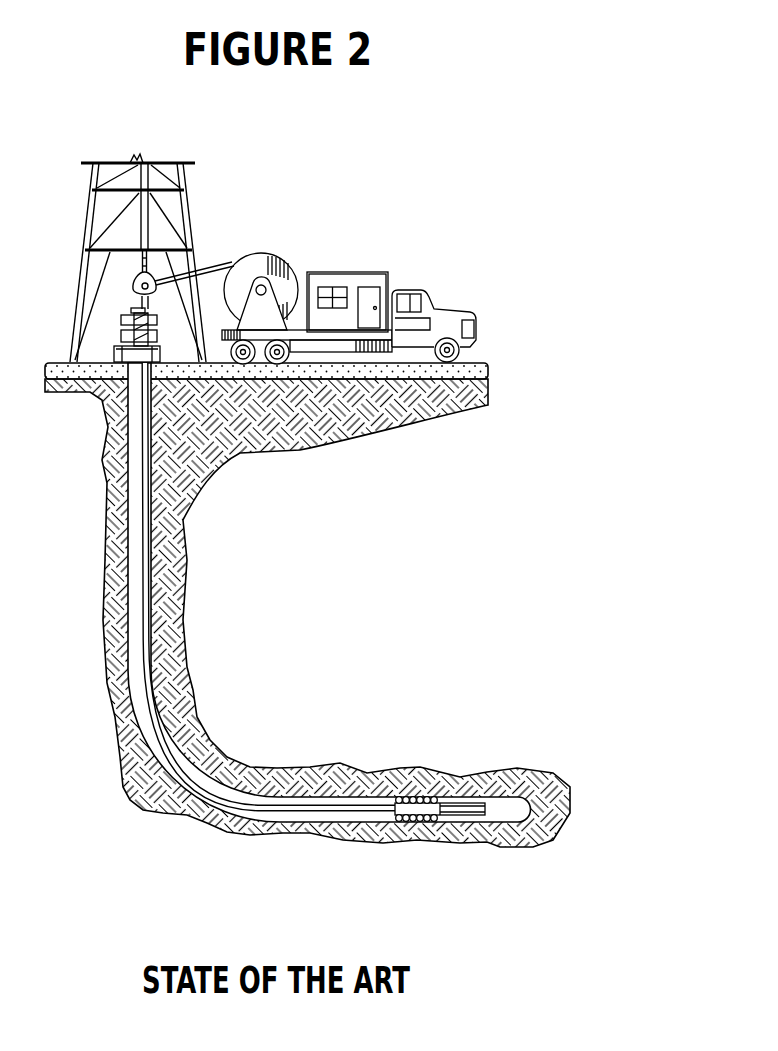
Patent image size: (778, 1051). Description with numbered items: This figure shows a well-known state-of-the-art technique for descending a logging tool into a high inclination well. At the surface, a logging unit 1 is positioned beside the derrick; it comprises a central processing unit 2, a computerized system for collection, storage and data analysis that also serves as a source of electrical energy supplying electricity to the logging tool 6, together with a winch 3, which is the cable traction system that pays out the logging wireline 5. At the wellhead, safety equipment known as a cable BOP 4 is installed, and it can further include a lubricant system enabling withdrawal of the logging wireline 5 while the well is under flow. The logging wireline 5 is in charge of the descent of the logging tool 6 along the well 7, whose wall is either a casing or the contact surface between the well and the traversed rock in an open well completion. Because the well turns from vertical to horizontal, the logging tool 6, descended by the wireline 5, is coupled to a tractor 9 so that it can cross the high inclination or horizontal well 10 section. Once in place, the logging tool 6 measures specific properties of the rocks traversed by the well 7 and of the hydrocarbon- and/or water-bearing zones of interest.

The logging unit 1 is at (437, 308).
The central processing unit 2 is at (337, 272).
The winch 3 is at (258, 252).
The cable BOP 4 is at (119, 320).
The logging wireline 5 is at (209, 268).
The logging tool 6 is at (465, 803).
The well 7 is at (125, 512).
The tractor 9 is at (410, 797).
The horizontal well section 10 is at (337, 772).